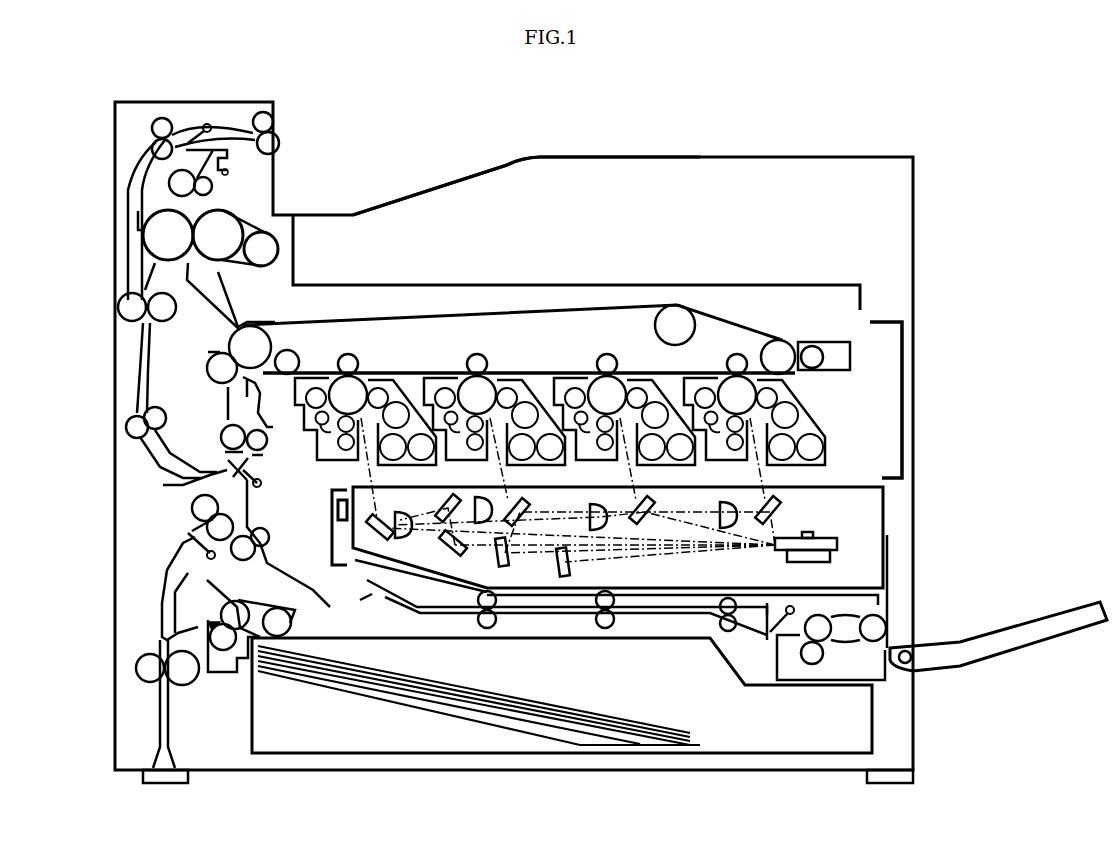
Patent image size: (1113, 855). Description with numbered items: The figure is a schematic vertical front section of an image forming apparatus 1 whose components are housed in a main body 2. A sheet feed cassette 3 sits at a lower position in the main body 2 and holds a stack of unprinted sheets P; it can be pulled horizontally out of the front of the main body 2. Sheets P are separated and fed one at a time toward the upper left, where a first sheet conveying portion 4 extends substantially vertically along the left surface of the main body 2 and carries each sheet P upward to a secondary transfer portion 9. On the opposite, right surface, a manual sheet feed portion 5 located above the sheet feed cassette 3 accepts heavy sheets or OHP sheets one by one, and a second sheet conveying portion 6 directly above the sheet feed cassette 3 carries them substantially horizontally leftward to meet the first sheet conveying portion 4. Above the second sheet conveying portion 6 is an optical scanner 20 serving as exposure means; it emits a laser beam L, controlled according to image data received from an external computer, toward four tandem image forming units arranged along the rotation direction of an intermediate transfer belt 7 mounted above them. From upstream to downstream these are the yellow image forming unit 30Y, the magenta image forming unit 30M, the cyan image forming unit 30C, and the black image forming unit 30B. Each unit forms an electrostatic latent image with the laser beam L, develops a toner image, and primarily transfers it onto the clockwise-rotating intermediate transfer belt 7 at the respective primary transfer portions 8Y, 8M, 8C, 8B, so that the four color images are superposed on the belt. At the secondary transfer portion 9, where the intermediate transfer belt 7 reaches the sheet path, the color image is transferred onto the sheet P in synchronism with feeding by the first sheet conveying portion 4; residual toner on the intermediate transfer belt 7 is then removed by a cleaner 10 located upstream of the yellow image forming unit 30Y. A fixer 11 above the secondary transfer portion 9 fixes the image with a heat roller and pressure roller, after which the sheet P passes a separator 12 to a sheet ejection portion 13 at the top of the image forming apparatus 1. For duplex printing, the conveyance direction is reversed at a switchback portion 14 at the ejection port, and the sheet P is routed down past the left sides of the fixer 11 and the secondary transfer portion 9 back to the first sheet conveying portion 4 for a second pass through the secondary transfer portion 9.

The image forming apparatus 1 is at (764, 92).
The main body 2 is at (913, 155).
The sheet feed cassette 3 is at (393, 755).
The first sheet conveying portion 4 is at (185, 518).
The manual sheet feed portion 5 is at (1032, 645).
The second sheet conveying portion 6 is at (657, 622).
The intermediate transfer belt 7 is at (403, 328).
The primary transfer portion 8B is at (338, 352).
The primary transfer portion 8C is at (468, 352).
The primary transfer portion 8M is at (598, 352).
The primary transfer portion 8Y is at (727, 352).
The secondary transfer portion 9 is at (195, 362).
The cleaner 10 is at (855, 357).
The fixer 11 is at (165, 205).
The separator 12 is at (208, 126).
The sheet ejection portion 13 is at (383, 202).
The switchback portion 14 is at (280, 105).
The optical scanner 20 is at (887, 535).
The black image forming unit 30B is at (312, 462).
The cyan image forming unit 30C is at (535, 383).
The magenta image forming unit 30M is at (665, 383).
The yellow image forming unit 30Y is at (813, 402).
The laser beam L is at (702, 560).
The sheet P is at (466, 722).